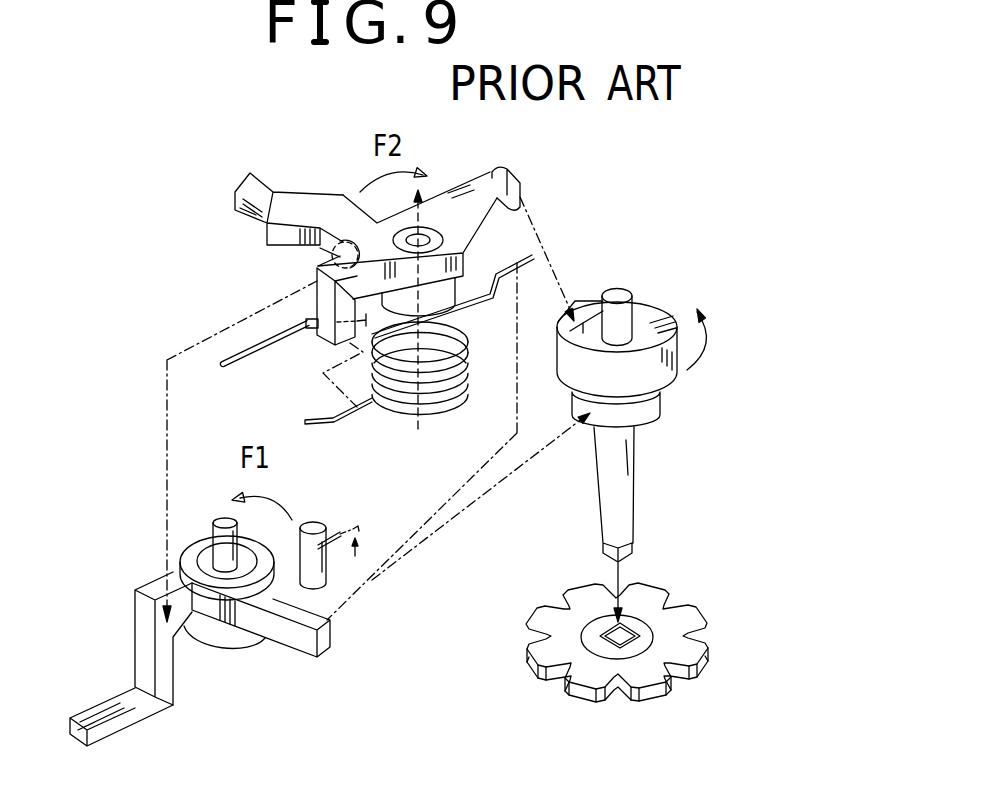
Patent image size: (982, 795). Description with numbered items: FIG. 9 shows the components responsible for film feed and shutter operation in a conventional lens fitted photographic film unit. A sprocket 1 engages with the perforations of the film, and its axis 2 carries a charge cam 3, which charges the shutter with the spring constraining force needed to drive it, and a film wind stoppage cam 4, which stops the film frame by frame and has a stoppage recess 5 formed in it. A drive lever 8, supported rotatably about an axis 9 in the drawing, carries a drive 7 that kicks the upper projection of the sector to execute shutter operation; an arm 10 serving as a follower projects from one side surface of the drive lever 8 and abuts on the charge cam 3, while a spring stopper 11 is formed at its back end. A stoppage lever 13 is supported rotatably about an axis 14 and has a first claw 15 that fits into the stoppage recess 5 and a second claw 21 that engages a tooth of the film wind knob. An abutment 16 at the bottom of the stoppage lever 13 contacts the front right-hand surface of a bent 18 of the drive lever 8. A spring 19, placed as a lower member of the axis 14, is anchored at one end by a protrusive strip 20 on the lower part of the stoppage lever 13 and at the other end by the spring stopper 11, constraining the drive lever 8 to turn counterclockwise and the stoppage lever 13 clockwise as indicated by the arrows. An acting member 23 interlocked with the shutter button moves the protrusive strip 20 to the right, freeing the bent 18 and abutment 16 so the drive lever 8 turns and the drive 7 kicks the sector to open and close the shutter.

The sprocket 1 is at (682, 640).
The axis 2 is at (634, 466).
The charge cam 3 is at (662, 406).
The film wind stoppage cam 4 is at (650, 312).
The stoppage recess 5 is at (576, 313).
The drive 7 is at (120, 695).
The drive lever 8 is at (238, 662).
The wheel 9 is at (213, 538).
The arm 10 is at (300, 630).
The spring stopper 11 is at (315, 522).
The stoppage lever 13 is at (262, 264).
The axis 14 is at (432, 234).
The first claw 15 is at (500, 170).
The abutment 16 is at (345, 240).
The bent 18 is at (138, 603).
The spring 19 is at (400, 407).
The protrusive strip 20 is at (322, 335).
The second claw 21 is at (255, 182).
The acting member 23 is at (222, 362).